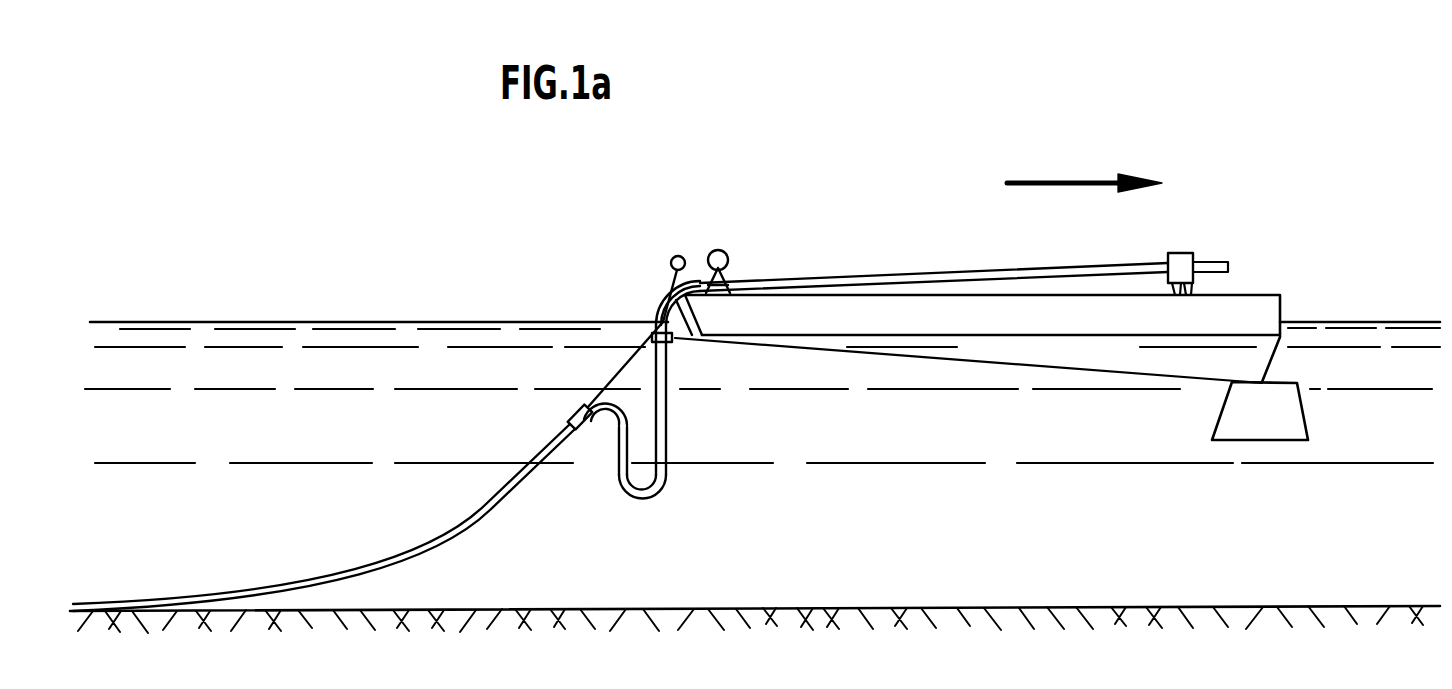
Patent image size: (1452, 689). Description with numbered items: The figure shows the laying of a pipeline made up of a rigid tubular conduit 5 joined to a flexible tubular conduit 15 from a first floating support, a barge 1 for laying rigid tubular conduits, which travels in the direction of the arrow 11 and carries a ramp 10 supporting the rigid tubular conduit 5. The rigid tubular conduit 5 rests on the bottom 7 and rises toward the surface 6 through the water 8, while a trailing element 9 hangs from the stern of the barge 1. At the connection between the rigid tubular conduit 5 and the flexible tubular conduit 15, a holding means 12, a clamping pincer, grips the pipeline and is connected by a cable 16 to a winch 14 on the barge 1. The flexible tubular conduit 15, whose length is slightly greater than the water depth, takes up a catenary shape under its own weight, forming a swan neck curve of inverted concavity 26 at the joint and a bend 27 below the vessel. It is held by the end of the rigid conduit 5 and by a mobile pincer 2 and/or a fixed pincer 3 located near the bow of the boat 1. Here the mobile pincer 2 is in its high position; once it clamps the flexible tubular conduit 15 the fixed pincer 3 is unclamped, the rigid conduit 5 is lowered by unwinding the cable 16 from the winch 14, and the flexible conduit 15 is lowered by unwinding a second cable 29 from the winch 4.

The barge 1 is at (1243, 295).
The mobile pincer 2 is at (654, 342).
The fixed pincer 3 is at (1180, 253).
The winch 4 is at (670, 256).
The rigid tubular conduit 5 is at (517, 503).
The water surface 6 is at (1356, 322).
The bottom 7 is at (1225, 606).
The water 8 is at (1068, 506).
The anchor 9 is at (1287, 414).
The ramp 10 is at (675, 338).
The arrow 11 is at (1082, 178).
The holding means 12 is at (573, 412).
The winch 14 is at (730, 259).
The flexible tubular conduit 15 is at (943, 271).
The cable 16 is at (628, 337).
The loop 26 is at (598, 412).
The U-bend 27 is at (640, 498).
The second cable 29 is at (656, 290).